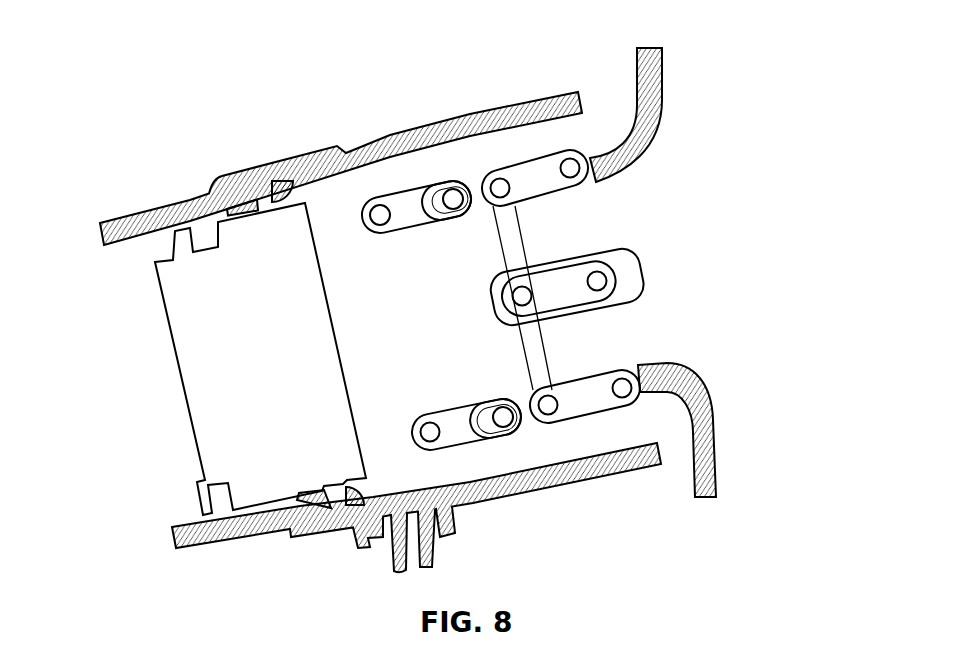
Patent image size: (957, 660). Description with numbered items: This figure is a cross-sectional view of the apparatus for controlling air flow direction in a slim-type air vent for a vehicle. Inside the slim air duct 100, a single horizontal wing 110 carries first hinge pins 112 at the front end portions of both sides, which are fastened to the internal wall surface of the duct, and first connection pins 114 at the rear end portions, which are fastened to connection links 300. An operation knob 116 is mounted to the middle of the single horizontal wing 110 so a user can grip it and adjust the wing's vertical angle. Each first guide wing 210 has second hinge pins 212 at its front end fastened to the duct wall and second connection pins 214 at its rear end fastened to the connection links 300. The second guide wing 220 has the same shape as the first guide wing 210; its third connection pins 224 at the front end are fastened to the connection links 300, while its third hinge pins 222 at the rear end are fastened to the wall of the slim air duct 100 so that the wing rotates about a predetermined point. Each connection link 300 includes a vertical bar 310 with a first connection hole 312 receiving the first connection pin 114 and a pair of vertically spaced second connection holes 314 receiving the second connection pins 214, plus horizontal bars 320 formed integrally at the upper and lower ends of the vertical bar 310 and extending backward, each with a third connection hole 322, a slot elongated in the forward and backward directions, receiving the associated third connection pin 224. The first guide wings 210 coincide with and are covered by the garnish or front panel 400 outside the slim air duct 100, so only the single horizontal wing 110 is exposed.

The slim air duct 100 is at (378, 134).
The single horizontal wing 110 is at (623, 276).
The first hinge pin 112 is at (600, 284).
The first connection pin 114 is at (522, 298).
The operation knob 116 is at (637, 253).
The first guide wing 210 is at (542, 158).
The second hinge pin 212 is at (590, 178).
The second connection pin 214 is at (501, 186).
The second guide wing 220 is at (397, 190).
The third hinge pin 222 is at (371, 203).
The third connection pin 224 is at (454, 198).
The connection link 300 is at (492, 238).
The vertical bar 310 is at (550, 348).
The first connection hole 312 is at (526, 330).
The second connection hole 314 is at (549, 410).
The horizontal bar 320 is at (527, 430).
The third connection hole 322 is at (482, 401).
The front panel 400 is at (662, 92).